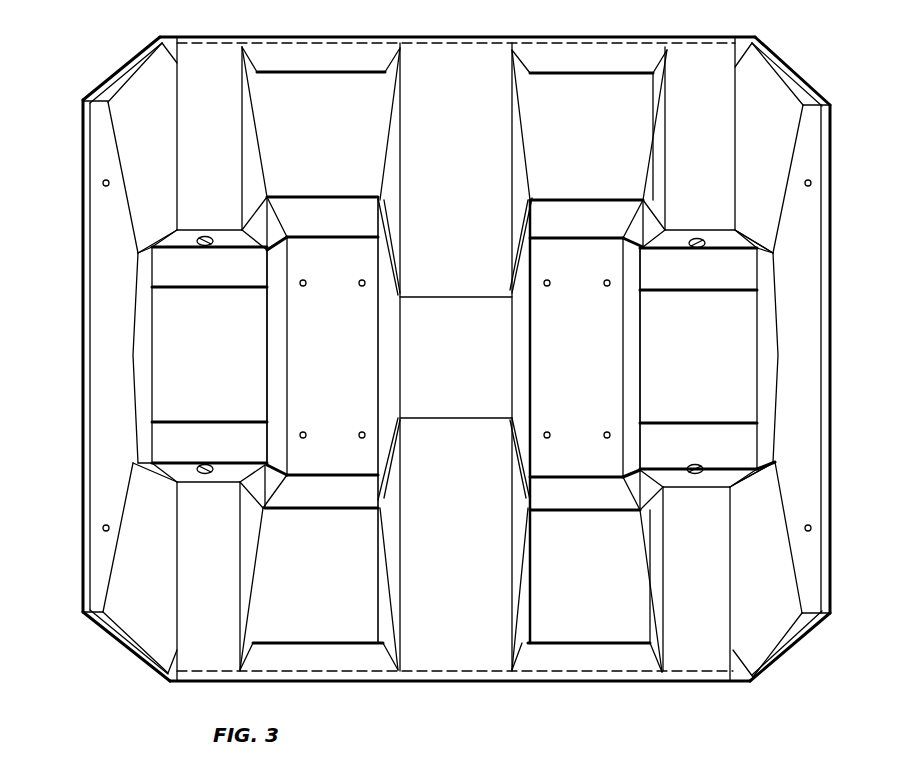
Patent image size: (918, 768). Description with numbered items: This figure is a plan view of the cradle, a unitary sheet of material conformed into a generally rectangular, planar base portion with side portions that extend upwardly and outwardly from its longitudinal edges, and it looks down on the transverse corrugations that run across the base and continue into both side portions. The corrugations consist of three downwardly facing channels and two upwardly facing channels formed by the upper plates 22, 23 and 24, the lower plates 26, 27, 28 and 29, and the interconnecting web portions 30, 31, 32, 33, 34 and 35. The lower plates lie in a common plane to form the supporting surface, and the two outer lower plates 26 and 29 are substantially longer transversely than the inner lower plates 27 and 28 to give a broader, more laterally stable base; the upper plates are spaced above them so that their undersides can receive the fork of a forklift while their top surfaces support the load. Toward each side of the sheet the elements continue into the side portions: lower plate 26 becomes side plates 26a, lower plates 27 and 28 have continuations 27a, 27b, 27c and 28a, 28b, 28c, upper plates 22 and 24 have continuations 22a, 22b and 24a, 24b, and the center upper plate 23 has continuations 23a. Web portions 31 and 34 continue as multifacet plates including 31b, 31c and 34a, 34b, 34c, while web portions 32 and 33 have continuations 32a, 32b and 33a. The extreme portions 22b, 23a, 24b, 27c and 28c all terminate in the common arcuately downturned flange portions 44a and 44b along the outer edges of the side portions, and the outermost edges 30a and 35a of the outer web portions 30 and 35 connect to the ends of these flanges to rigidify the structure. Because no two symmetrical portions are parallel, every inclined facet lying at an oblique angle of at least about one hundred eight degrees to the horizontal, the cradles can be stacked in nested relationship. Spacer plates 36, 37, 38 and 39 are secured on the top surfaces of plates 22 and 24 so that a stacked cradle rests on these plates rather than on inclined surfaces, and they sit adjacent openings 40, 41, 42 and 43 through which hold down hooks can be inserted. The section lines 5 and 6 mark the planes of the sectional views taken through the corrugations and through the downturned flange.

The section line 5- 5 is at (77, 355).
The section line 6- 6 is at (490, 610).
The upper plate 22 is at (219, 365).
The continuation of upper plate 22a is at (181, 238).
The extreme portion of upper plate 22b is at (223, 173).
The center upper plate 23 is at (469, 362).
The continuation of center upper plate 23a is at (464, 177).
The upper plate 24 is at (716, 376).
The continuation of upper plate 24a is at (672, 238).
The extreme portion of upper plate 24b is at (722, 132).
The outer lower plate 26 is at (106, 323).
The side plate 26a is at (107, 76).
The inner lower plate 27 is at (339, 345).
The continuation of lower plate 27a is at (364, 227).
The continuation of lower plate 27b is at (342, 150).
The extreme portion of lower plate 27c is at (339, 67).
The inner lower plate 28 is at (586, 369).
The continuation of lower plate 28a is at (597, 230).
The continuation of lower plate 28b is at (606, 172).
The extreme portion of lower plate 28c is at (582, 67).
The outer lower plate 29 is at (803, 340).
The outer web portion 30 is at (143, 327).
The outermost edge of web portion 30a is at (162, 197).
The web portion 31 is at (278, 369).
The multifacet plate 31b is at (262, 217).
The multifacet plate 31c is at (254, 119).
The web portion 32 is at (389, 326).
The continuation of web portion 32a is at (386, 241).
The continuation of web portion 32b is at (396, 109).
The web portion 33 is at (518, 373).
The continuation of web portion 33a is at (523, 245).
The web portion 34 is at (632, 346).
The multifacet plate 34a is at (637, 227).
The multifacet plate 34b is at (655, 230).
The multifacet plate 34c is at (658, 125).
The outer web portion 35 is at (767, 388).
The outermost edge of web portion 35a is at (780, 207).
The spacer plate 36 is at (197, 278).
The spacer plate 37 is at (173, 428).
The spacer plate 38 is at (713, 283).
The spacer plate 39 is at (665, 430).
The opening 40 is at (211, 244).
The opening 41 is at (210, 465).
The opening 42 is at (688, 244).
The opening 43 is at (689, 468).
The arcuately downturned flange portion 44a is at (297, 36).
The arcuately downturned flange portion 44b is at (574, 683).